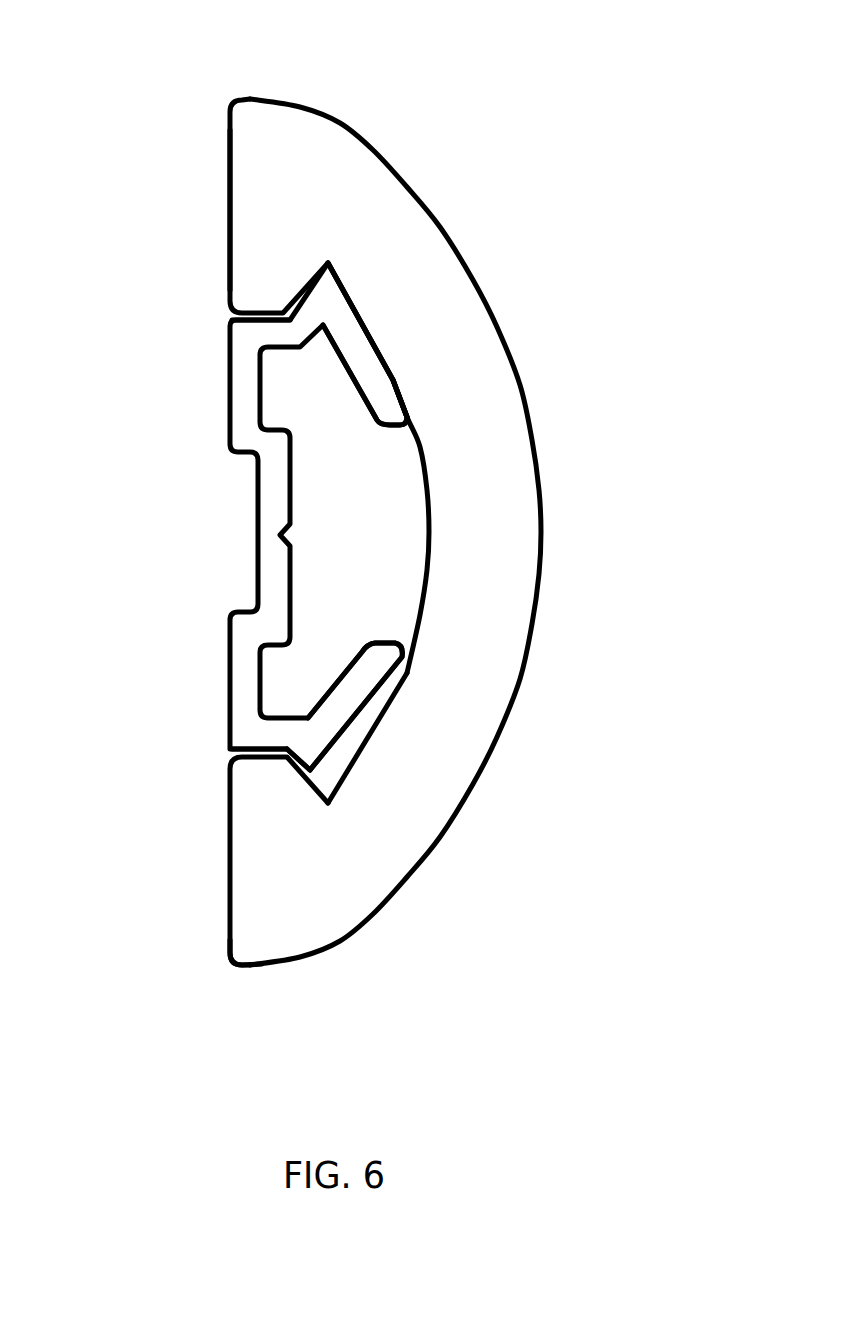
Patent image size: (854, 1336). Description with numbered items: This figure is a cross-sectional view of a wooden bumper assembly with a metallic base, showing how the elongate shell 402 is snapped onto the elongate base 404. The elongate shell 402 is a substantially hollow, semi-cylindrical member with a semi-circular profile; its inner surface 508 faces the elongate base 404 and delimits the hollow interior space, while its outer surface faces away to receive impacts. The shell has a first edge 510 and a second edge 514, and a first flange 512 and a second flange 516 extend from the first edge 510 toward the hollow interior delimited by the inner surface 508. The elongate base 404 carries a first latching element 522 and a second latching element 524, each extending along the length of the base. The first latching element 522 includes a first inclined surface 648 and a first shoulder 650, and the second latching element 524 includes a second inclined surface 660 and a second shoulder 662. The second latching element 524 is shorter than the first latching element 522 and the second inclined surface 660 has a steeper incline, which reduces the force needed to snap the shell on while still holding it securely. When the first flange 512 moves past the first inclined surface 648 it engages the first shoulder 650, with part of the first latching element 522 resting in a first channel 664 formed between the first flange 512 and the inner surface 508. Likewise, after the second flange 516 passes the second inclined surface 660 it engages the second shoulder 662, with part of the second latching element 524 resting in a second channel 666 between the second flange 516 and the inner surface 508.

The elongate shell 402 is at (503, 558).
The elongate base 404 is at (245, 432).
The inner surface 508 is at (433, 520).
The first edge 510 is at (243, 97).
The first flange 512 is at (260, 213).
The second edge 514 is at (247, 957).
The second flange 516 is at (263, 827).
The first latching element 522 is at (287, 330).
The second latching element 524 is at (293, 733).
The first inclined surface 648 is at (375, 330).
The first shoulder 650 is at (307, 290).
The second inclined surface 660 is at (360, 710).
The second shoulder 662 is at (293, 763).
The first channel 664 is at (345, 282).
The second channel 666 is at (350, 787).